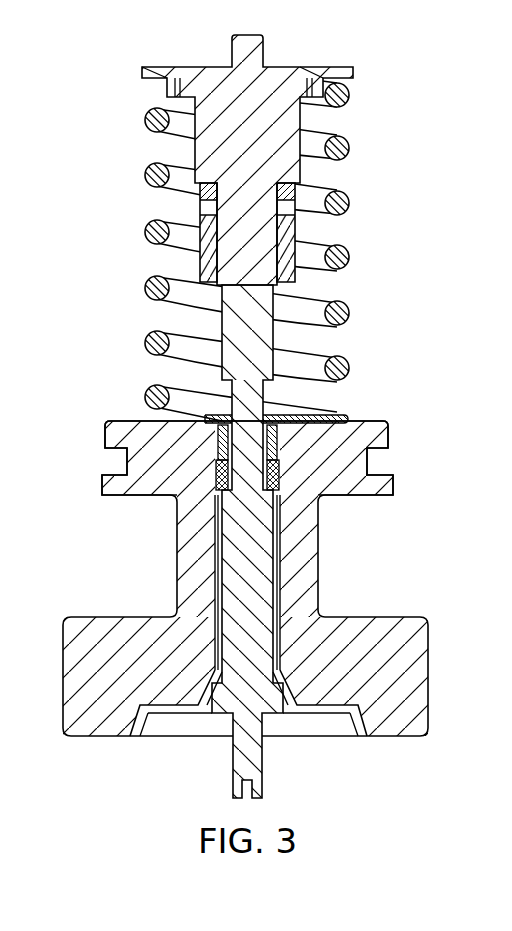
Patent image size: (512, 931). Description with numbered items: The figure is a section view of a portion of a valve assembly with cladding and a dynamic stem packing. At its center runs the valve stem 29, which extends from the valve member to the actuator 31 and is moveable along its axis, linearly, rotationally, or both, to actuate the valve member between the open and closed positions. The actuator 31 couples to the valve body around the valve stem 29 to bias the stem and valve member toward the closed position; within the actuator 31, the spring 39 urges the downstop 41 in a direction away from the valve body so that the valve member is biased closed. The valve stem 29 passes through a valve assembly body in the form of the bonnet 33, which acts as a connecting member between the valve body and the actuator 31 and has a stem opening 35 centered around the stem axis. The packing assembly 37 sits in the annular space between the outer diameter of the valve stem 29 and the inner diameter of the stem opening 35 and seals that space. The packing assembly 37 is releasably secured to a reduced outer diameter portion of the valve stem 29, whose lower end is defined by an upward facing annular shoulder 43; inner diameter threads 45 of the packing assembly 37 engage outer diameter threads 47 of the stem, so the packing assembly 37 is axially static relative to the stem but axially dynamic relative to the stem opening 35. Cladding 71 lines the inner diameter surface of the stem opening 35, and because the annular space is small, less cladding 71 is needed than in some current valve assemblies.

The valve stem 29 is at (256, 583).
The actuator 31 is at (372, 198).
The bonnet 33 is at (404, 683).
The stem opening 35 is at (219, 533).
The packing assembly 37 is at (295, 453).
The spring 39 is at (352, 252).
The downstop 41 is at (283, 73).
The upward facing annular shoulder 43 is at (300, 492).
The inner diameter threads 45 is at (232, 409).
The outer diameter threads 47 is at (287, 434).
The cladding 71 is at (216, 590).